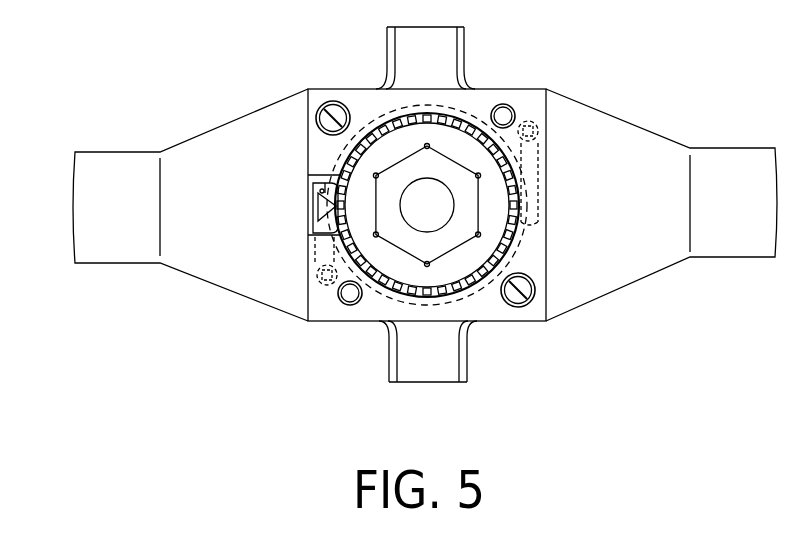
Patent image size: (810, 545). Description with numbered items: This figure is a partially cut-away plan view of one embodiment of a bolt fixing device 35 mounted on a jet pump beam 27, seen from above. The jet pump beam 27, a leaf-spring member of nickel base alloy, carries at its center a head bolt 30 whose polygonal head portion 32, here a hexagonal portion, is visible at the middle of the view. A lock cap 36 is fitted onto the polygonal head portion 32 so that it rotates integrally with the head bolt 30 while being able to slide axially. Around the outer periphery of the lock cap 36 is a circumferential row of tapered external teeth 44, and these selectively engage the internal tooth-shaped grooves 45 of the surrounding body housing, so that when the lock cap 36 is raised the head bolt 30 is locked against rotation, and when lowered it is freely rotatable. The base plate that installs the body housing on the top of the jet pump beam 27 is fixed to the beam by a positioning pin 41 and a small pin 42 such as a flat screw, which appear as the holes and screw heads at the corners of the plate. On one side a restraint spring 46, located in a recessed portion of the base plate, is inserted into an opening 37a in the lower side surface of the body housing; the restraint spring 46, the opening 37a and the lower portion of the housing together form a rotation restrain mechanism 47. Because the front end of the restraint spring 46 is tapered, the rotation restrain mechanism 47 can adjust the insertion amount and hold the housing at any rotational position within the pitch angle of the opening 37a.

The jet pump beam 27 is at (264, 312).
The head bolt 30 is at (449, 231).
The polygonal head portion 32 is at (478, 218).
The bolt fixing device 35 is at (325, 155).
The lock cap 36 is at (387, 258).
The opening 37a is at (307, 180).
The positioning pin 41 is at (506, 106).
The small pin 42 is at (330, 103).
The tapered external teeth 44 is at (450, 118).
The internal tooth-shaped grooves 45 is at (512, 180).
The restraint spring 46 is at (318, 228).
The rotation restrain mechanism 47 is at (299, 204).